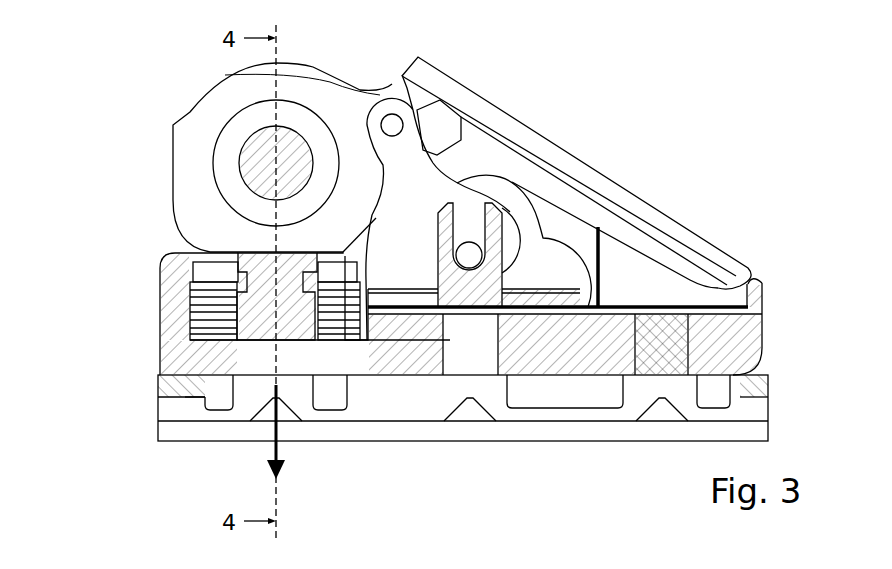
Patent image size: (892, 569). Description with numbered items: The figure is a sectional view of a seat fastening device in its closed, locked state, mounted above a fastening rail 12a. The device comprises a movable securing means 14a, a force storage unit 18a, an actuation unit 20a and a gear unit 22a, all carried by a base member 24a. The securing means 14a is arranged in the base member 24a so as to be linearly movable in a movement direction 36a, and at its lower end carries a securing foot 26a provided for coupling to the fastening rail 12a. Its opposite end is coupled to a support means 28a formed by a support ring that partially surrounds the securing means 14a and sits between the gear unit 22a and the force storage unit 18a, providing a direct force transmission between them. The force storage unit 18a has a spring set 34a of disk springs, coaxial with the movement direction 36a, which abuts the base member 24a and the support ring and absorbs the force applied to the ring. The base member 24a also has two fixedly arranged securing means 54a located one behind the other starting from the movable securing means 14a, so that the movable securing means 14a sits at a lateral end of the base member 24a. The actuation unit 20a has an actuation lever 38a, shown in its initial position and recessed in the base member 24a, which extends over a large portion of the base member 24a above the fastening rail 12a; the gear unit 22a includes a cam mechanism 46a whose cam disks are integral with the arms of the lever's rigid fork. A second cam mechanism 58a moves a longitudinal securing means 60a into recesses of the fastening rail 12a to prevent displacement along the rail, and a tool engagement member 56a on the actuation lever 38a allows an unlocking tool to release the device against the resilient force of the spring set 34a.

The fastening rail 12a is at (146, 406).
The movable securing means 14a is at (136, 291).
The force storage unit 18a is at (172, 330).
The actuation unit 20a is at (562, 106).
The gear unit 22a is at (182, 250).
The base member 24a is at (200, 343).
The securing foot 26a is at (262, 355).
The support means 28a is at (150, 199).
The spring set 34a is at (188, 300).
The movement direction 36a is at (225, 465).
The actuation lever 38a is at (577, 155).
The cam mechanism 46a is at (177, 203).
The fixedly arranged securing means 54a is at (668, 306).
The tool engagement member 56a is at (484, 103).
The second cam mechanism 58a is at (542, 236).
The longitudinal securing means 60a is at (585, 306).